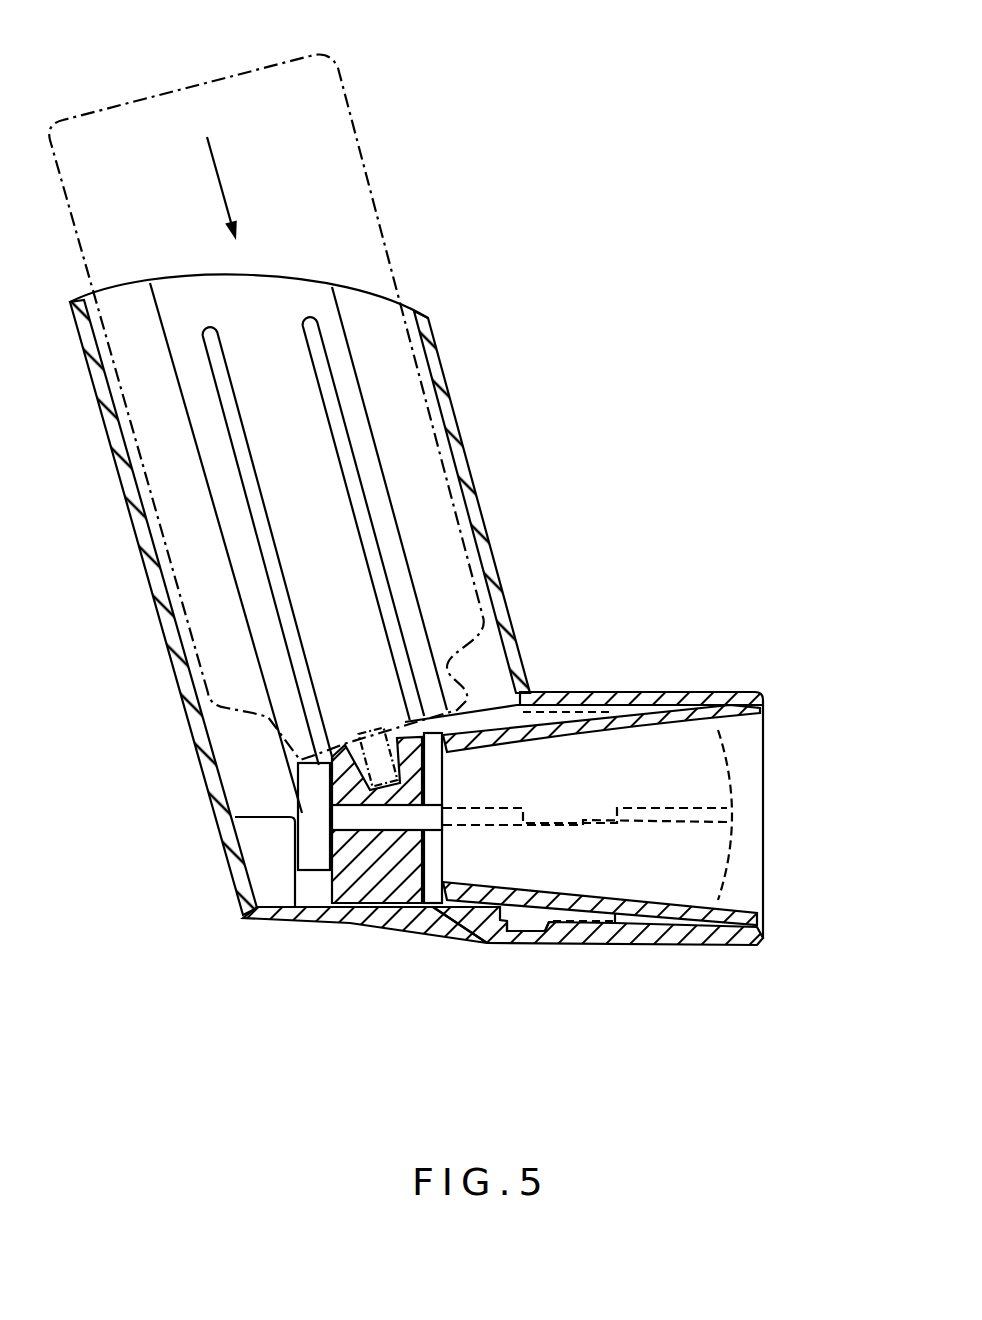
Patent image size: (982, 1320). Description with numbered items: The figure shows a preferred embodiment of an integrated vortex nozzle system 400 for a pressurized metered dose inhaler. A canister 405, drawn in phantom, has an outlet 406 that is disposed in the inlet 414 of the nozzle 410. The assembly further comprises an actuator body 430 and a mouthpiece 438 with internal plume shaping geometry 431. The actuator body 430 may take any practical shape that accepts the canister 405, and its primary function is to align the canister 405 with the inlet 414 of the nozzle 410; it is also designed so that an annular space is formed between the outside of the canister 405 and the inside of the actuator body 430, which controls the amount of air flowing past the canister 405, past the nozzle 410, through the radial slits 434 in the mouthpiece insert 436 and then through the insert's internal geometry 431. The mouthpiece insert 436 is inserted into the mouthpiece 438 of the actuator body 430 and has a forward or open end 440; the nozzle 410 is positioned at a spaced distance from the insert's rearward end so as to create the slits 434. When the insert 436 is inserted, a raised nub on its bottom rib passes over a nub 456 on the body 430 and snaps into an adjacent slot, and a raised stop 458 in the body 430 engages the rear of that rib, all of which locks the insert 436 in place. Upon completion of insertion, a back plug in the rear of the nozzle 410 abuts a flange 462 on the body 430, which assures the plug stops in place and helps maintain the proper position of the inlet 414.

The integrated vortex nozzle system 400 is at (604, 213).
The canister 405 is at (376, 205).
The outlet 406 is at (357, 715).
The nozzle 410 is at (332, 875).
The inlet 414 is at (343, 790).
The actuator body 430 is at (473, 480).
The internal plume shaping geometry 431 is at (702, 900).
The radial slits 434 is at (400, 917).
The mouthpiece insert 436 is at (490, 897).
The mouthpiece 438 is at (620, 690).
The open end 440 is at (770, 924).
The nub 456 is at (530, 928).
The raised stop 458 is at (390, 933).
The flange 462 is at (250, 852).